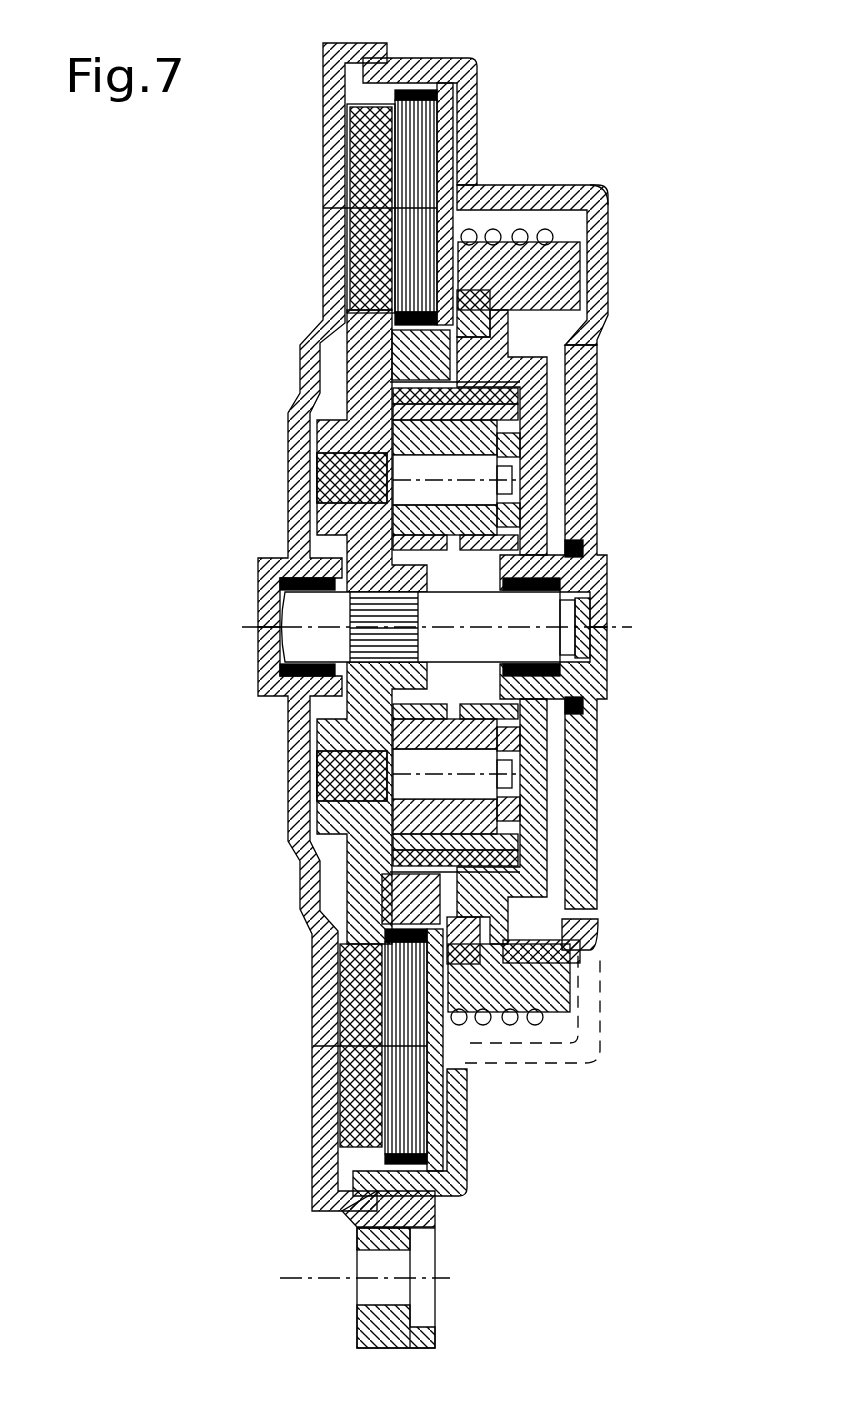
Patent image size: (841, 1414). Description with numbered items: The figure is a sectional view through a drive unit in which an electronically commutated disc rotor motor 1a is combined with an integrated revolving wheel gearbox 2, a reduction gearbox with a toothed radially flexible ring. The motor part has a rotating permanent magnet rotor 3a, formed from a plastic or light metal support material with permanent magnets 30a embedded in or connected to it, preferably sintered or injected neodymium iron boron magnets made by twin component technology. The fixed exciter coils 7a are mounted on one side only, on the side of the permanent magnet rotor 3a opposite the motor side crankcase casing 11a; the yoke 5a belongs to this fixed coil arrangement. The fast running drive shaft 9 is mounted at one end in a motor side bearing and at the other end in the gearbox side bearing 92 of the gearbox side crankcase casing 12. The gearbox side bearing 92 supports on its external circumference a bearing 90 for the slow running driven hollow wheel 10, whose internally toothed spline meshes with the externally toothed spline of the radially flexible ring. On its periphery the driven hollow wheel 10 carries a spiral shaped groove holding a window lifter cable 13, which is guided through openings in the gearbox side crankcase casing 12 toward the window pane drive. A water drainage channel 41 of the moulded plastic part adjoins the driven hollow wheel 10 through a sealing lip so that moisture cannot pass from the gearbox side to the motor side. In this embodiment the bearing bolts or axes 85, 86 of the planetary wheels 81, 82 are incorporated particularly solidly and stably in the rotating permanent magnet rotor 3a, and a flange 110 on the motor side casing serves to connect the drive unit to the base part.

The electronically commutated disc rotor motor 1a is at (325, 48).
The revolving wheel gearbox 2 is at (573, 123).
The permanent magnet rotor 3a is at (368, 140).
The yoke 5a is at (473, 112).
The fixed exciter coils 7a is at (428, 92).
The drive shaft 9 is at (305, 643).
The driven hollow wheel 10 is at (540, 297).
The motor side crankcase casing 11a is at (328, 223).
The gearbox side crankcase casing 12 is at (600, 255).
The window lifter cable 13 is at (465, 237).
The permanent magnets 30a is at (367, 275).
The water drainage channel 41 is at (592, 207).
The planetary wheel 81 is at (470, 468).
The planetary wheel 82 is at (478, 783).
The bearing axis 85 is at (340, 487).
The bearing axis 86 is at (333, 762).
The bearing 90 is at (590, 545).
The gearbox side bearing 92 is at (592, 664).
The flange 110 is at (358, 1230).